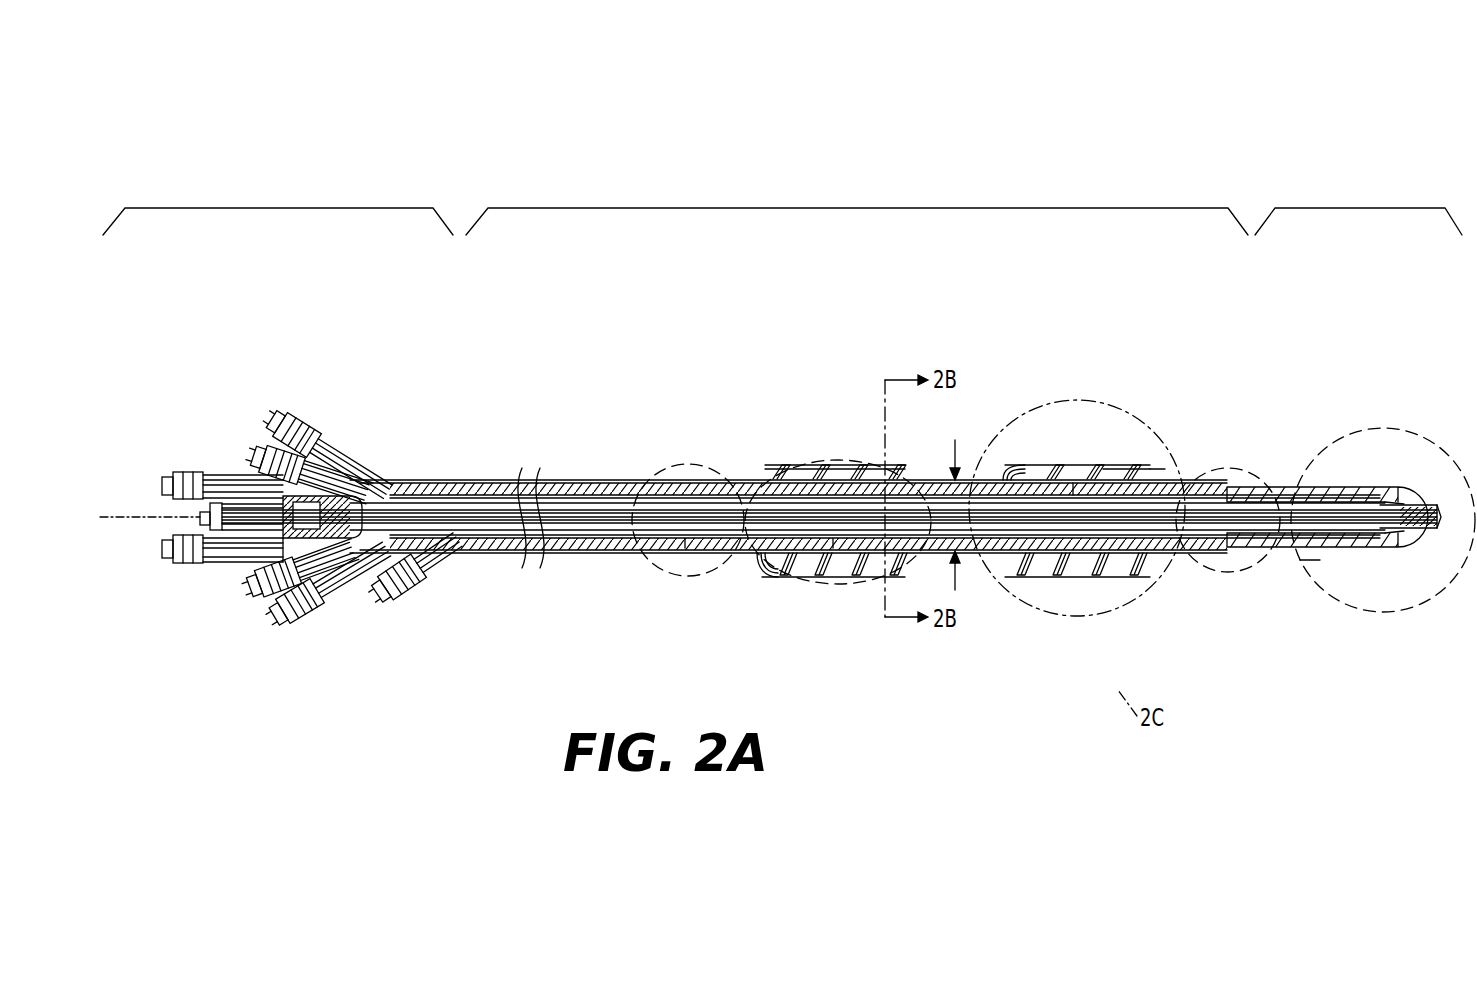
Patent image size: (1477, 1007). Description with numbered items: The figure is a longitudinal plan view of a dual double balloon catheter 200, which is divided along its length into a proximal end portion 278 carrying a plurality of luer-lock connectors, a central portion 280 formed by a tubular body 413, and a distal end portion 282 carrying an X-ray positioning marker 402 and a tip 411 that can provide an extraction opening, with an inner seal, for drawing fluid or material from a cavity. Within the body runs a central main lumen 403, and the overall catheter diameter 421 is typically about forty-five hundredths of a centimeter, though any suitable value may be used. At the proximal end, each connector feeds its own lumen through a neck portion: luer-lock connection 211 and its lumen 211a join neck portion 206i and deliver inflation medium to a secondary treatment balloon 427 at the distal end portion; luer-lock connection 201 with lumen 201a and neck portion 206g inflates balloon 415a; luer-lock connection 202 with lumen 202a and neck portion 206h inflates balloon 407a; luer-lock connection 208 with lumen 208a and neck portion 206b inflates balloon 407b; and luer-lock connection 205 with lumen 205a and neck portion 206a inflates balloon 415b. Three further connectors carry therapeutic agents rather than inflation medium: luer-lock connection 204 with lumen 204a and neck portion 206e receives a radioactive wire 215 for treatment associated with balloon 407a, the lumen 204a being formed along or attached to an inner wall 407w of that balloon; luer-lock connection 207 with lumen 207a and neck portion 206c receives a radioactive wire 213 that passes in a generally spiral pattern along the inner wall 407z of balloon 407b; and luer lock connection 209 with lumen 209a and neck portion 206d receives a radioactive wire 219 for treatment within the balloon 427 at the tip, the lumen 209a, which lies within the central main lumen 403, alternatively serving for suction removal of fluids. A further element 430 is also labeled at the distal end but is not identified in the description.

The dual double balloon catheter 200 is at (1080, 111).
The proximal end portion 278 is at (283, 208).
The central portion 280 is at (815, 208).
The distal end portion 282 is at (1312, 208).
The luer-lock connection 201 is at (305, 580).
The lumen 201a is at (277, 593).
The luer-lock connection 202 is at (263, 570).
The lumen 202a is at (253, 590).
The luer-lock connection 204 is at (173, 557).
The lumen 204a is at (153, 550).
The luer-lock connection 205 is at (283, 422).
The lumen 205a is at (277, 422).
The neck portion 206a is at (378, 483).
The neck portion 206b is at (320, 445).
The neck portion 206c is at (263, 455).
The neck portion 206d is at (205, 560).
The neck portion 206e is at (207, 560).
The neck portion 206g is at (330, 590).
The neck portion 206h is at (372, 590).
The neck portion 206i is at (447, 552).
The luer-lock connection 207 is at (187, 472).
The lumen 207a is at (158, 483).
The luer-lock connection 208 is at (245, 475).
The lumen 208a is at (274, 450).
The luer lock connection 209 is at (200, 520).
The lumen 209a is at (203, 512).
The luer-lock connection 211 is at (407, 587).
The lumen 211a is at (377, 587).
The radioactive wire 213 is at (135, 488).
The radioactive wire 215 is at (135, 550).
The radioactive wire 219 is at (100, 512).
The marker 402 is at (1437, 447).
The central main lumen 403 is at (590, 530).
The balloon 407a is at (793, 463).
The balloon 407b is at (1067, 580).
The inner wall 407w is at (847, 465).
The inner wall 407z is at (1170, 477).
The tip 411 is at (1433, 527).
The tubular body 413 is at (496, 479).
The balloon 415a is at (683, 467).
The balloon 415b is at (1247, 467).
The diameter 421 is at (956, 502).
The secondary treatment balloon 427 is at (1312, 572).
The tip core 430 is at (1292, 478).